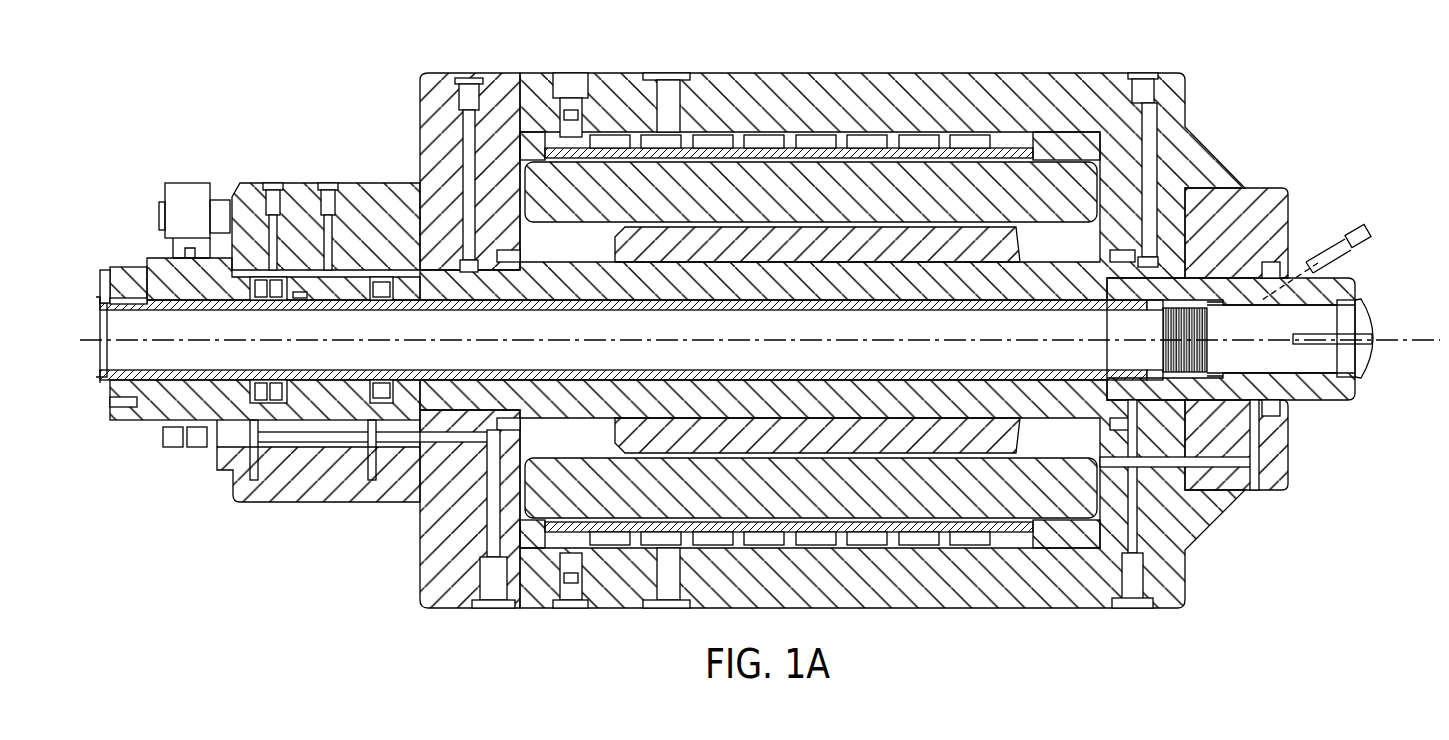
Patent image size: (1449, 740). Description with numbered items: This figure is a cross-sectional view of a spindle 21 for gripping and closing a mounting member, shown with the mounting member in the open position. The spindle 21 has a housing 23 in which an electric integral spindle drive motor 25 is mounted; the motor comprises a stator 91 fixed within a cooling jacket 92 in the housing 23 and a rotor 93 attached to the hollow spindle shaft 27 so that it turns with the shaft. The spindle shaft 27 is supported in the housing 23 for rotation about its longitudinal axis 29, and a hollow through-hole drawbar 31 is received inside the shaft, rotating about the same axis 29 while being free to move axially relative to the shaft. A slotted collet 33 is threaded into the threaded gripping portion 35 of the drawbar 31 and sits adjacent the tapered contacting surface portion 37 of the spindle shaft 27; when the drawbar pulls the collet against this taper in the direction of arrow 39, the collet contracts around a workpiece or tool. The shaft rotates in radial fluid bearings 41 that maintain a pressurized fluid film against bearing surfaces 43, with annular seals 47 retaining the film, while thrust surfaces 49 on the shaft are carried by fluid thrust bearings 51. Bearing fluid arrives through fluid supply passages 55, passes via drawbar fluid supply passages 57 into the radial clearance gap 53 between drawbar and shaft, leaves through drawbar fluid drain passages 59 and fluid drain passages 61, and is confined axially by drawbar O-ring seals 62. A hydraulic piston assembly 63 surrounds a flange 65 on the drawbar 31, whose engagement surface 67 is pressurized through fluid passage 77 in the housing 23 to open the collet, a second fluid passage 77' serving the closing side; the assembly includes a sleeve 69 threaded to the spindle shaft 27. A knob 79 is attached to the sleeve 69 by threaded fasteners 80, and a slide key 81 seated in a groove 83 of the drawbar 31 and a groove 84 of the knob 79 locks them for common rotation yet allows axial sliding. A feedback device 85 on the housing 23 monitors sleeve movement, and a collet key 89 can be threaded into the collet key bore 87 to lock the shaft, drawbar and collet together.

The spindle 21 is at (898, 30).
The housing 23 is at (772, 73).
The electric integral spindle drive motor 25 is at (610, 156).
The hollow spindle shaft 27 is at (697, 292).
The longitudinal axis 29 is at (775, 340).
The hollow through-hole drawbar 31 is at (953, 385).
The slotted collet 33 is at (1365, 312).
The threaded gripping portion 35 is at (1205, 320).
The tapered contacting surface portion 37 is at (1346, 400).
The arrow 39 is at (375, 340).
The radial fluid bearings 41 is at (1233, 272).
The bearing surfaces 43 is at (1207, 276).
The annular seals 47 is at (1122, 252).
The thrust surfaces 49 is at (1140, 408).
The fluid thrust bearings 51 is at (1110, 306).
The radial clearance gap 53 is at (277, 385).
The fluid supply passages 55 is at (468, 90).
The drawbar fluid supply passages 57 is at (258, 300).
The drawbar fluid drain passages 59 is at (252, 380).
The fluid drain passages 61 is at (1257, 446).
The drawbar O-ring seals 62 is at (195, 300).
The hydraulic piston assembly 63 is at (255, 243).
The flange 65 is at (318, 287).
The engagement surface 67 is at (297, 296).
The sleeve 69 is at (160, 255).
The fluid passage 77 is at (260, 199).
The fluid passage 77' is at (315, 194).
The knob 79 is at (116, 400).
The threaded fasteners 80 is at (112, 278).
The slide key 81 is at (104, 290).
The groove 83 is at (152, 306).
The groove 84 is at (132, 274).
The feedback device 85 is at (176, 195).
The collet key bore 87 is at (1300, 293).
The collet key 89 is at (1350, 228).
The stator 91 is at (1060, 216).
The cooling jacket 92 is at (1028, 132).
The rotor 93 is at (1006, 240).